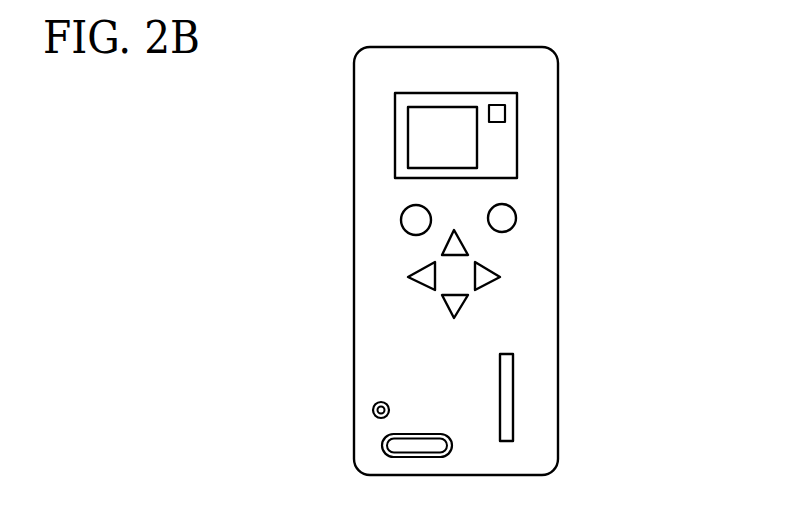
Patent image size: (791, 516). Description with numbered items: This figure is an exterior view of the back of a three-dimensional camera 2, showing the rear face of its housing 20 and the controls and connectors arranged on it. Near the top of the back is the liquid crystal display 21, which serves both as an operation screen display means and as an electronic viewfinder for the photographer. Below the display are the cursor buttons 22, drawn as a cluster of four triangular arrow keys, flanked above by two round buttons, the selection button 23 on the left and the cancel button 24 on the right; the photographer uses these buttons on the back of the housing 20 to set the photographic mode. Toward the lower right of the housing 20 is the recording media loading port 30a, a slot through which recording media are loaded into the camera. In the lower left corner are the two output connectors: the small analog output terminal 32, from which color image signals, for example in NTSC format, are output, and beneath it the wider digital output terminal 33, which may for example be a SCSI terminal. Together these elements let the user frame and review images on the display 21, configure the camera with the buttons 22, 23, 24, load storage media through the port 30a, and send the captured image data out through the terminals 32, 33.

The three-dimensional camera 2 is at (697, 86).
The housing 20 is at (558, 158).
The liquid crystal display 21 is at (395, 143).
The cursor buttons 22 is at (502, 267).
The selection button 23 is at (401, 226).
The cancel button 24 is at (516, 221).
The recording media loading port 30a is at (513, 387).
The analog output terminal 32 is at (373, 410).
The digital output terminal 33 is at (386, 443).